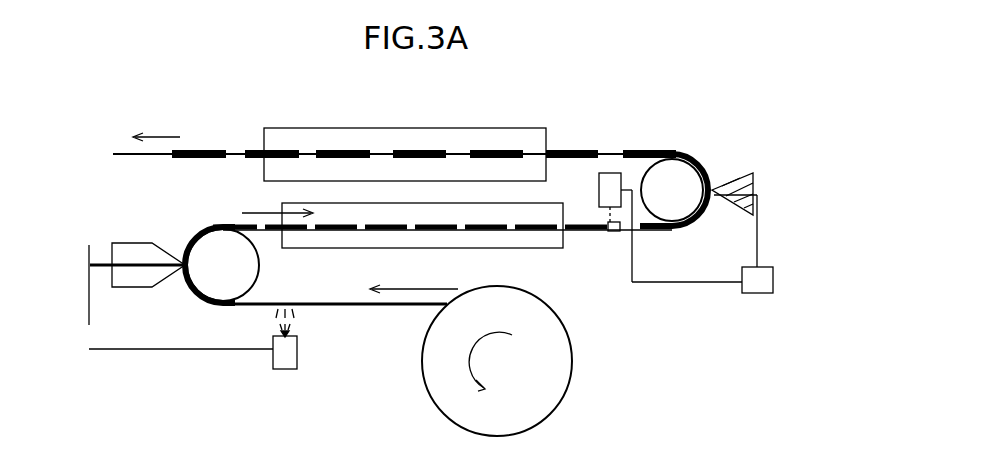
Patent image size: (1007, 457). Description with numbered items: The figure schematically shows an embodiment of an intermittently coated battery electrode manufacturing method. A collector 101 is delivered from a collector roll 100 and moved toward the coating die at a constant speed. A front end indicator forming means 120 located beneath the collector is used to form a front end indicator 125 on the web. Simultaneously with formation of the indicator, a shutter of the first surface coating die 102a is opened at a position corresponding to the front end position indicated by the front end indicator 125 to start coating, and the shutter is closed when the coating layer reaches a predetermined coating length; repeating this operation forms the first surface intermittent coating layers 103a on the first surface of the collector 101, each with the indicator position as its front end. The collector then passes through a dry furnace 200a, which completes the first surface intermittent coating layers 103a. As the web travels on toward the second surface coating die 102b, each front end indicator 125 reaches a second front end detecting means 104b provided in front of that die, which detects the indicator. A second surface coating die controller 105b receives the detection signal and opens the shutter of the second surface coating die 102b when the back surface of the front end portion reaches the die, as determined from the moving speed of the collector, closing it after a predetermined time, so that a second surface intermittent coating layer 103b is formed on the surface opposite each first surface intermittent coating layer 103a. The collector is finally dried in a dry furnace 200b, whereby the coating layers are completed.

The collector roll 100 is at (543, 389).
The collector 101 is at (558, 230).
The first surface coating die 102a is at (120, 243).
The second surface coating die 102b is at (736, 172).
The first surface intermittent coating layer 103a is at (385, 224).
The second surface intermittent coating layer 103b is at (418, 150).
The second front end detecting means 104b is at (609, 172).
The second surface coating die controller 105b is at (755, 287).
The front end indicator forming means 120 is at (287, 370).
The front end indicator 125 is at (606, 222).
The dry furnace 200a is at (328, 248).
The dry furnace 200b is at (325, 128).